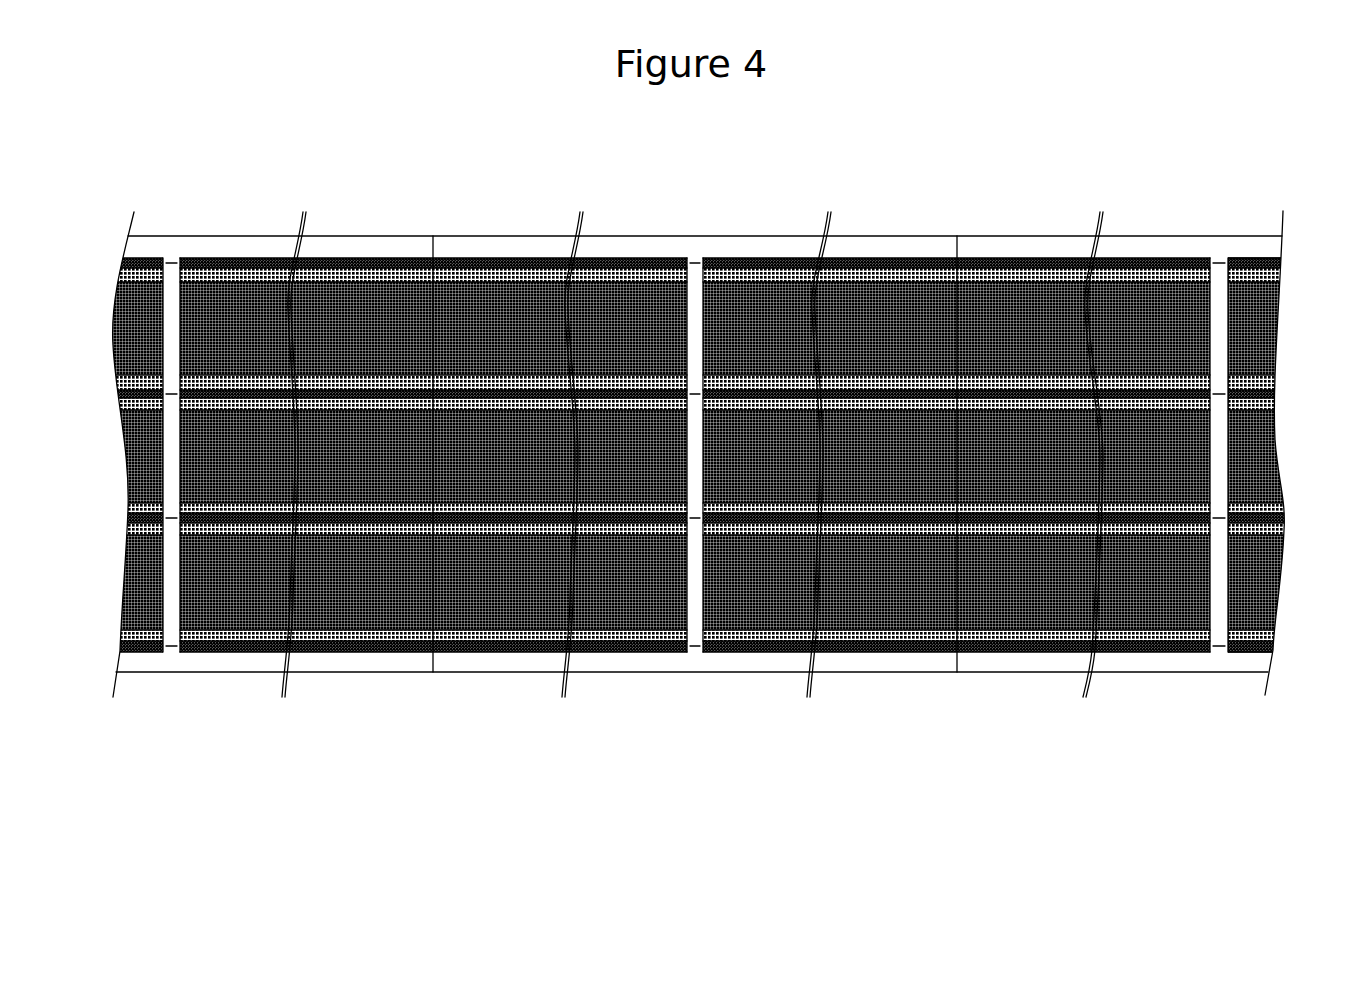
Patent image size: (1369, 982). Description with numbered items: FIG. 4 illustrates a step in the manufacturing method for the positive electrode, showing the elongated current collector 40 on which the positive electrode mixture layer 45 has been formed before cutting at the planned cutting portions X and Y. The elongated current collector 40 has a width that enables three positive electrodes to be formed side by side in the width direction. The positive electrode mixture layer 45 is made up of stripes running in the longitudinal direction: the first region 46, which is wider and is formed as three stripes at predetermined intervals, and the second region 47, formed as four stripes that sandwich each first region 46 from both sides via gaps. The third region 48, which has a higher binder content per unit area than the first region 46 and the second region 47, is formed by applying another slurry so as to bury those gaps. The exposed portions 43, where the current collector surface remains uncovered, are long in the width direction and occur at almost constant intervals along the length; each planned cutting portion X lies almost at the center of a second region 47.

The elongated current collector 40 is at (1052, 236).
The exposed portion 43 is at (165, 290).
The positive electrode mixture layer 45 is at (1262, 320).
The first region 46 is at (870, 300).
The second region 47 is at (760, 265).
The third region 48 is at (120, 271).